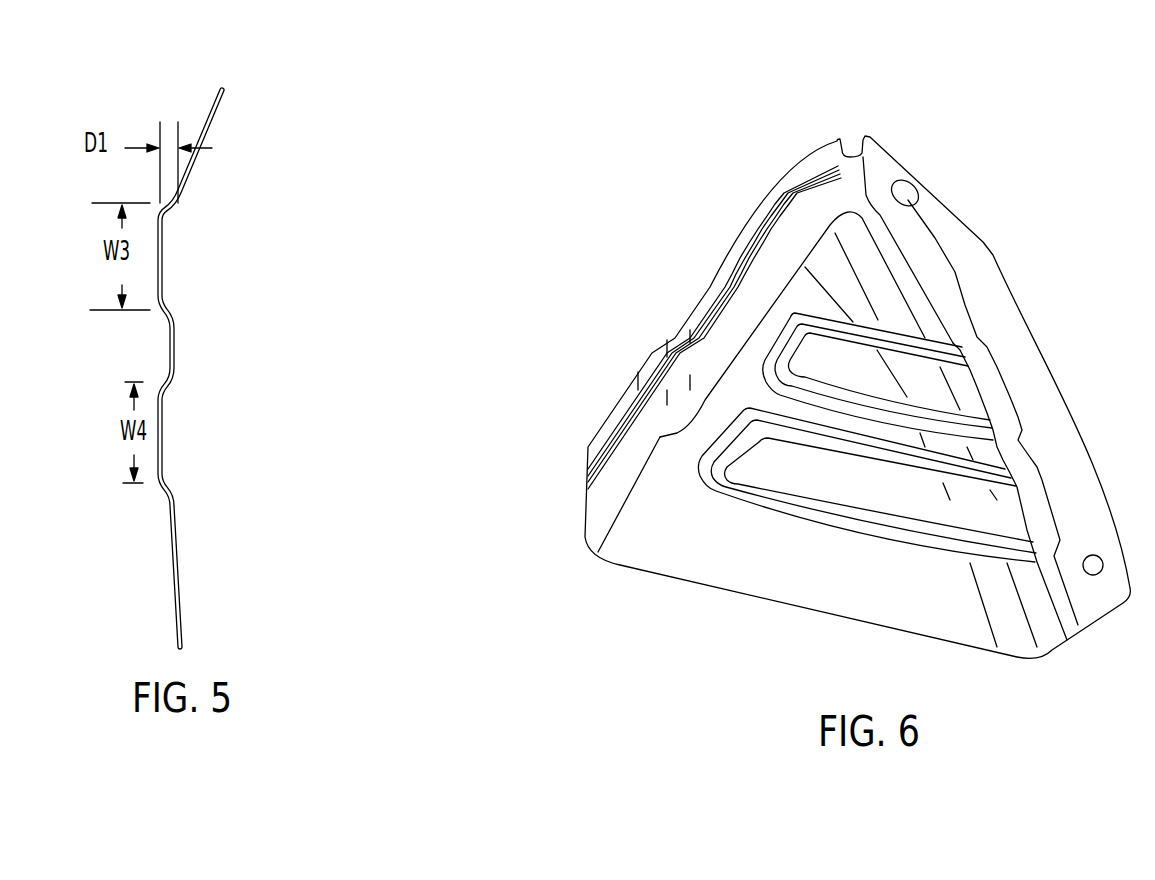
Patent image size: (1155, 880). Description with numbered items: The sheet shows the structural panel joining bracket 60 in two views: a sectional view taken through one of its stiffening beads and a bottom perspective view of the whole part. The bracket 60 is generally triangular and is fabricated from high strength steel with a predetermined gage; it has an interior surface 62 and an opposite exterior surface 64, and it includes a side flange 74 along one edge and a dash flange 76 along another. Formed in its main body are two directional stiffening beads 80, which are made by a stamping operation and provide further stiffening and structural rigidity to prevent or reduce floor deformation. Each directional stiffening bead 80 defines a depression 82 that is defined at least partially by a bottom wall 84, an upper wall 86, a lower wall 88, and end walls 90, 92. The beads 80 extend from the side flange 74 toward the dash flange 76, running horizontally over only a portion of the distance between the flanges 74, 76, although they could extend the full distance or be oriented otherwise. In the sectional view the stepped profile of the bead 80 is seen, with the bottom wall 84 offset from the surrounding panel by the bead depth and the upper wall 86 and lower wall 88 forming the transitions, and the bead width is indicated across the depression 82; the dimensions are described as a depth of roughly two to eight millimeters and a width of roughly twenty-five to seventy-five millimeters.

In FIG. 6, the structural panel joining bracket 60 is at (860, 104).
In FIG. 5, the interior surface 62 is at (182, 620).
In FIG. 5, the exterior surface 64 is at (176, 597).
In FIG. 6, the exterior surface 64 is at (667, 558).
In FIG. 6, the side flange 74 is at (1057, 418).
In FIG. 6, the dash flange 76 is at (723, 283).
In FIG. 5, the directional stiffening bead 80 is at (174, 225).
In FIG. 6, the directional stiffening bead 80 is at (913, 421).
In FIG. 5, the depression 82 is at (162, 288).
In FIG. 6, the depression 82 is at (990, 507).
In FIG. 5, the bottom wall 84 is at (162, 248).
In FIG. 6, the bottom wall 84 is at (808, 480).
In FIG. 5, the upper wall 86 is at (162, 382).
In FIG. 6, the upper wall 86 is at (765, 430).
In FIG. 5, the lower wall 88 is at (163, 493).
In FIG. 6, the lower wall 88 is at (903, 537).
In FIG. 6, the end wall 90 is at (1030, 523).
In FIG. 6, the end wall 92 is at (710, 445).